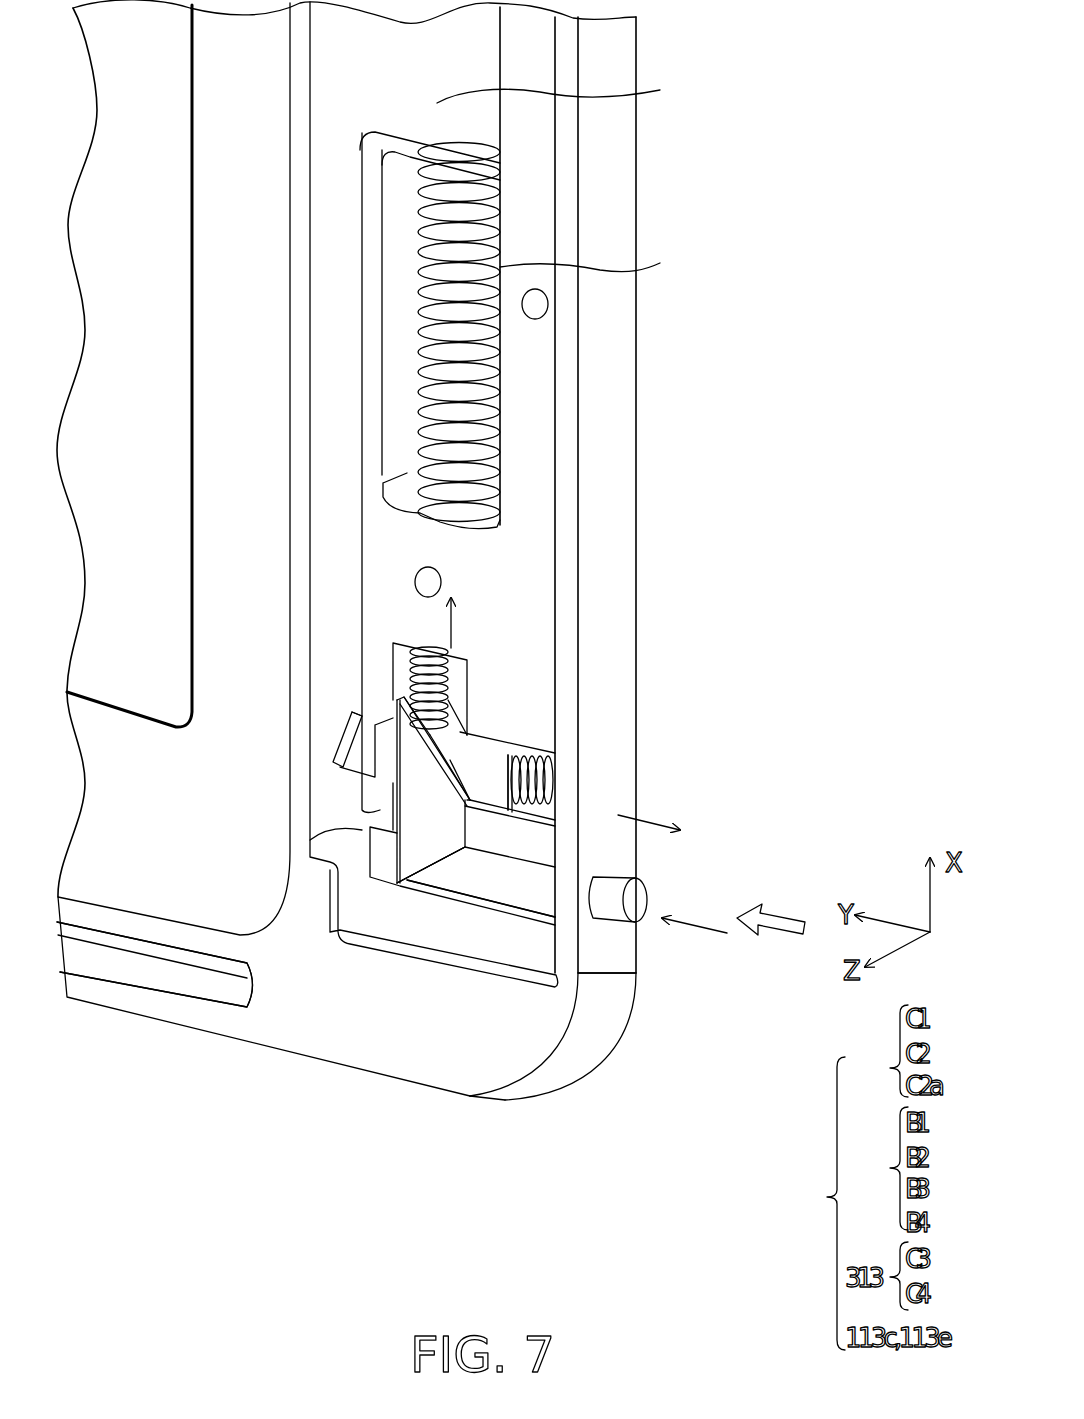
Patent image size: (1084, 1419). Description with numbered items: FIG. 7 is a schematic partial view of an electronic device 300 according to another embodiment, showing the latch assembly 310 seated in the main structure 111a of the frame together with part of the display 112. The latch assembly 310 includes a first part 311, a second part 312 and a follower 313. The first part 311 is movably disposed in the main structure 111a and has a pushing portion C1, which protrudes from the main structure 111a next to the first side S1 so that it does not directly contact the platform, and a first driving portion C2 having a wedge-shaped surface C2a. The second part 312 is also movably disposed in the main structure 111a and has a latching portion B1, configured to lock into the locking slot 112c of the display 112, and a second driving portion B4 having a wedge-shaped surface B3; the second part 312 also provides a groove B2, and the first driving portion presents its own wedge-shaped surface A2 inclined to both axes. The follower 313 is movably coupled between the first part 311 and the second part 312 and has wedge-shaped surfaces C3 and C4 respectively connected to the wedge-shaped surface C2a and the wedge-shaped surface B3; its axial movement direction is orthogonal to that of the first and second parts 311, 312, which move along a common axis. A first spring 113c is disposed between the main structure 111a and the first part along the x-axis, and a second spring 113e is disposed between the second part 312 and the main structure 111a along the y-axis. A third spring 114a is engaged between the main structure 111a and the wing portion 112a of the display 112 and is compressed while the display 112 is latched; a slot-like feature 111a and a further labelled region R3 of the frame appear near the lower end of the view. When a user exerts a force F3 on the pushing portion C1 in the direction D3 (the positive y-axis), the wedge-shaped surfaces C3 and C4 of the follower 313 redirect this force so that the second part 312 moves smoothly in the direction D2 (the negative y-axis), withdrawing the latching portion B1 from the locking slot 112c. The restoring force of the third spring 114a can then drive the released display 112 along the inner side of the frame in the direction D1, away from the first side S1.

The electronic device 300 is at (92, 1337).
The latch assembly 310 is at (813, 1203).
The first part 311 is at (876, 1051).
The second part 312 is at (876, 1168).
The follower 313 is at (432, 795).
The display 112 is at (165, 877).
The wing portion 112a is at (440, 100).
The locking slot 112c is at (387, 742).
The main structure 111a is at (202, 1012).
The third spring 114a is at (505, 268).
The first spring 113c is at (425, 647).
The second spring 113e is at (555, 775).
The wedge-shaped surface A2 is at (463, 712).
The latching portion B1 is at (420, 733).
The groove B2 is at (352, 720).
The wedge-shaped surface B3 is at (462, 765).
The second driving portion B4 is at (505, 760).
The pushing portion C1 is at (636, 897).
The first driving portion C2 is at (500, 888).
The wedge-shaped surface C2a is at (443, 862).
The wedge-shaped surface C3 is at (447, 852).
The wedge-shaped surface C4 is at (458, 768).
The direction D1 is at (474, 623).
The direction D2 is at (669, 832).
The direction D3 is at (694, 944).
The force F3 is at (772, 906).
The rounded portion R3 is at (636, 985).
The first side S1 is at (530, 1103).